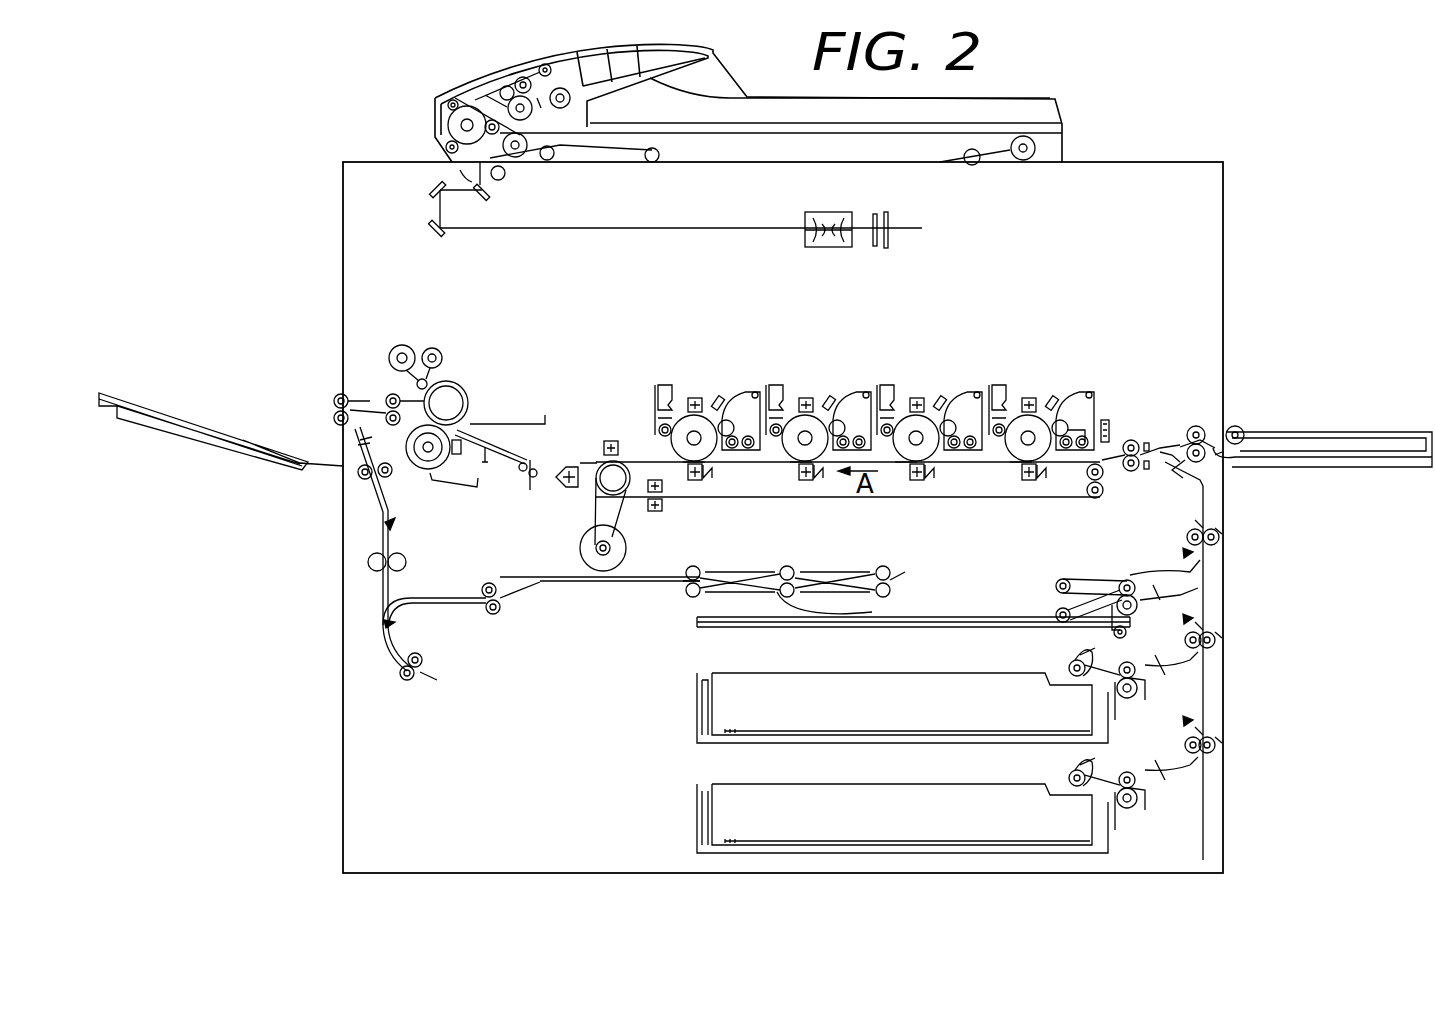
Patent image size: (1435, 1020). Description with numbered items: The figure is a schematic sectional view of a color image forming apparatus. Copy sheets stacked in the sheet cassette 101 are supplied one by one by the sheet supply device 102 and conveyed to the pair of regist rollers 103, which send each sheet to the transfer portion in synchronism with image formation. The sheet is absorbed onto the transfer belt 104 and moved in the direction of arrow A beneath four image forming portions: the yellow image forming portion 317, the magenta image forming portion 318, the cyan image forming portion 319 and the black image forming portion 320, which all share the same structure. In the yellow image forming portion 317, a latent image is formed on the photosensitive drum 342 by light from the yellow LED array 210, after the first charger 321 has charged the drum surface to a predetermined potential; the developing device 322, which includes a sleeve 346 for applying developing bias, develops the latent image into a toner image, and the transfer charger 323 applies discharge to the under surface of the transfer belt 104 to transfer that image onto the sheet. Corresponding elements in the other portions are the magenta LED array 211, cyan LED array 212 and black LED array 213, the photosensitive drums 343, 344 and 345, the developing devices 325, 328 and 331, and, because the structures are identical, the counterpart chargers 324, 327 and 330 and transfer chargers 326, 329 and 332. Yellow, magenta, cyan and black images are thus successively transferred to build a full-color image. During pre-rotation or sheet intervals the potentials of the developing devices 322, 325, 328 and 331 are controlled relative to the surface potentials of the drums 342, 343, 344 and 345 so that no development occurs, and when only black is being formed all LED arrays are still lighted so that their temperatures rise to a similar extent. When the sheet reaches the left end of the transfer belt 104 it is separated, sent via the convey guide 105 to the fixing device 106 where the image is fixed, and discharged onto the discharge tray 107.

The sheet cassette 101 is at (852, 716).
The sheet supply device 102 is at (1066, 658).
The pair of regist rollers 103 is at (1133, 482).
The transfer belt 104 is at (978, 470).
The convey guide 105 is at (499, 472).
The fixing device 106 is at (472, 386).
The discharge tray 107 is at (223, 421).
The yellow LED array 210 is at (1045, 412).
The magenta LED array 211 is at (933, 412).
The cyan LED array 212 is at (822, 412).
The black LED array 213 is at (712, 412).
The yellow image forming portion 317 is at (1030, 377).
The magenta image forming portion 318 is at (916, 377).
The cyan image forming portion 319 is at (805, 377).
The black image forming portion 320 is at (694, 378).
The first charger 321 is at (1007, 392).
The developing device 322 is at (1072, 397).
The transfer charger 323 is at (1033, 480).
The developing device 324 is at (895, 392).
The developing device 325 is at (960, 395).
The transfer charger 326 is at (920, 480).
The developing device 327 is at (790, 392).
The developing device 328 is at (849, 395).
The transfer charger 329 is at (810, 480).
The developing device 330 is at (687, 388).
The developing device 331 is at (738, 395).
The transfer charger 332 is at (700, 480).
The photosensitive drum 342 is at (1015, 462).
The photosensitive drum 343 is at (897, 462).
The photosensitive drum 344 is at (792, 462).
The photosensitive drum 345 is at (686, 462).
The sleeve 346 is at (1075, 418).